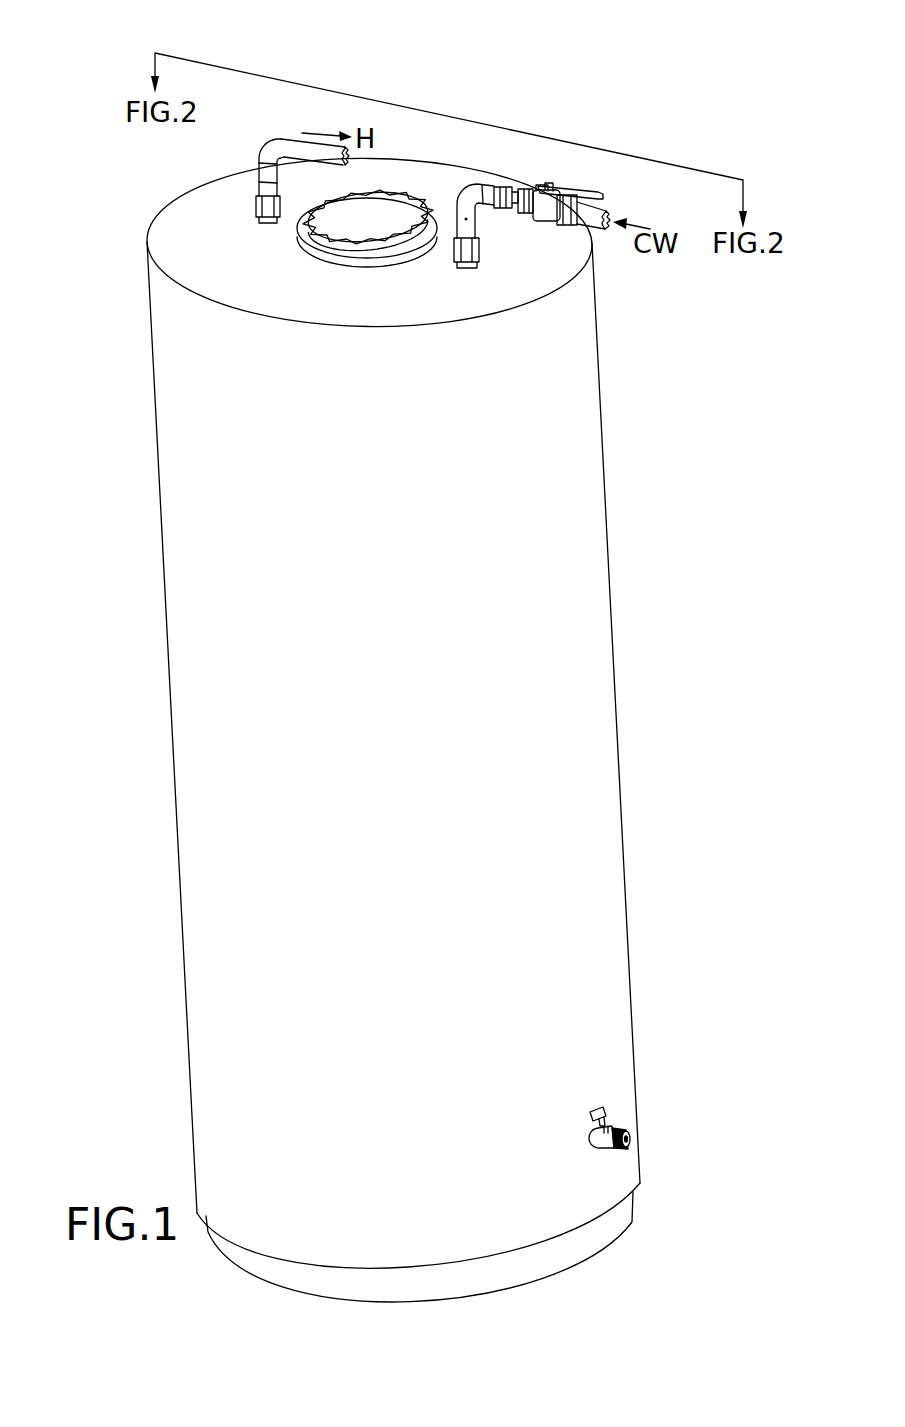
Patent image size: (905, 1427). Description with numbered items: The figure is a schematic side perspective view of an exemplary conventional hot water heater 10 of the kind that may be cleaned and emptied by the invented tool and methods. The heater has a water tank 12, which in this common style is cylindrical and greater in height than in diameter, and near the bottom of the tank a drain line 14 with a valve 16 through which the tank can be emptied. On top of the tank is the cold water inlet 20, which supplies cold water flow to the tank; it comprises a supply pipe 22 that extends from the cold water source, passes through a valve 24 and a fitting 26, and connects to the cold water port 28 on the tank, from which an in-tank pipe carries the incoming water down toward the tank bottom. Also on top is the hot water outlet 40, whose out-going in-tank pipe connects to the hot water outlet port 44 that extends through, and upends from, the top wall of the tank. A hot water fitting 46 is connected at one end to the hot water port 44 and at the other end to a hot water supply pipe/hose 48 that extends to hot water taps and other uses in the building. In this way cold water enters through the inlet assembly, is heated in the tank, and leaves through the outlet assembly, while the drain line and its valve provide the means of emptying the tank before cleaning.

The hot water heater 10 is at (133, 186).
The water tank 12 is at (225, 717).
The drain line 14 is at (600, 1140).
The valve 16 is at (603, 1110).
The cold water inlet 20 is at (521, 168).
The supply pipe 22 is at (603, 210).
The valve 24 is at (543, 212).
The fitting 26 is at (467, 187).
The cold water port 28 is at (472, 253).
The hot water outlet 40 is at (240, 98).
The hot water outlet port 44 is at (260, 205).
The hot water fitting 46 is at (268, 150).
The hot water supply pipe/hose 48 is at (303, 147).